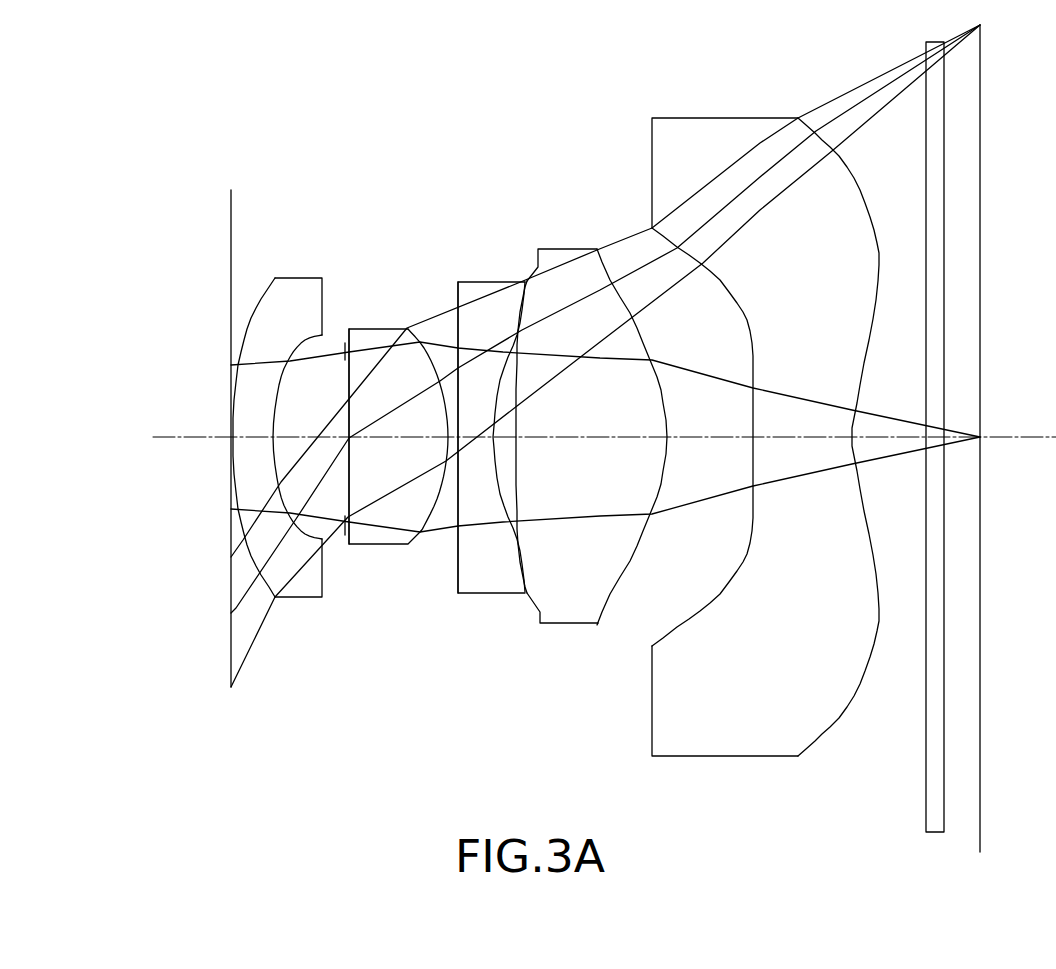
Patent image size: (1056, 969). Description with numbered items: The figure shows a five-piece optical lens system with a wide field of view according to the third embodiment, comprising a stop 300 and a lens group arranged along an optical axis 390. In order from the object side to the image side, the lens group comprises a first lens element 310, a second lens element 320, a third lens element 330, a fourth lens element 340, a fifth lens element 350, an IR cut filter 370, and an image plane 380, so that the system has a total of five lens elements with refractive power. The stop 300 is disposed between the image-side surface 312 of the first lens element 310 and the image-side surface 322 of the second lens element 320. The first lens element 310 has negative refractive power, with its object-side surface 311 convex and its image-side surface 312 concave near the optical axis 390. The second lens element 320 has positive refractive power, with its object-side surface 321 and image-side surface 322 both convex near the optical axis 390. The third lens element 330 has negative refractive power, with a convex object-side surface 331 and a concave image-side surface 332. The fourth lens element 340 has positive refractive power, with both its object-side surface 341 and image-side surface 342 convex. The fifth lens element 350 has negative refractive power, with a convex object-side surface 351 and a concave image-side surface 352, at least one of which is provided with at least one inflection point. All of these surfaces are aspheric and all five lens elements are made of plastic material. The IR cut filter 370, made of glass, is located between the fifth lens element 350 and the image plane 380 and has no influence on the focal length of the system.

The stop 300 is at (350, 338).
The first lens element 310 is at (282, 454).
The object-side surface of the first lens element 311 is at (256, 578).
The image-side surface of the first lens element 312 is at (313, 535).
The second lens element 320 is at (395, 429).
The object-side surface of the second lens element 321 is at (349, 470).
The image-side surface of the second lens element 322 is at (446, 515).
The third lens element 330 is at (478, 432).
The object-side surface of the third lens element 331 is at (458, 547).
The image-side surface of the third lens element 332 is at (512, 546).
The fourth lens element 340 is at (597, 426).
The object-side surface of the fourth lens element 341 is at (556, 552).
The image-side surface of the fourth lens element 342 is at (648, 530).
The fifth lens element 350 is at (773, 417).
The object-side surface of the fifth lens element 351 is at (713, 603).
The image-side surface of the fifth lens element 352 is at (855, 697).
The IR cut filter 370 is at (924, 213).
The image plane 380 is at (991, 152).
The optical axis 390 is at (166, 437).